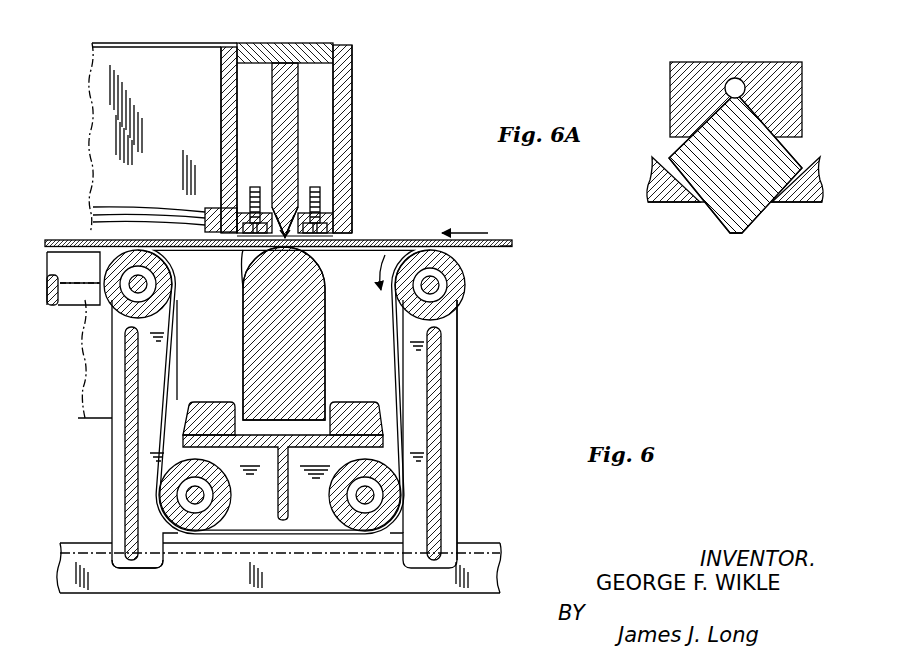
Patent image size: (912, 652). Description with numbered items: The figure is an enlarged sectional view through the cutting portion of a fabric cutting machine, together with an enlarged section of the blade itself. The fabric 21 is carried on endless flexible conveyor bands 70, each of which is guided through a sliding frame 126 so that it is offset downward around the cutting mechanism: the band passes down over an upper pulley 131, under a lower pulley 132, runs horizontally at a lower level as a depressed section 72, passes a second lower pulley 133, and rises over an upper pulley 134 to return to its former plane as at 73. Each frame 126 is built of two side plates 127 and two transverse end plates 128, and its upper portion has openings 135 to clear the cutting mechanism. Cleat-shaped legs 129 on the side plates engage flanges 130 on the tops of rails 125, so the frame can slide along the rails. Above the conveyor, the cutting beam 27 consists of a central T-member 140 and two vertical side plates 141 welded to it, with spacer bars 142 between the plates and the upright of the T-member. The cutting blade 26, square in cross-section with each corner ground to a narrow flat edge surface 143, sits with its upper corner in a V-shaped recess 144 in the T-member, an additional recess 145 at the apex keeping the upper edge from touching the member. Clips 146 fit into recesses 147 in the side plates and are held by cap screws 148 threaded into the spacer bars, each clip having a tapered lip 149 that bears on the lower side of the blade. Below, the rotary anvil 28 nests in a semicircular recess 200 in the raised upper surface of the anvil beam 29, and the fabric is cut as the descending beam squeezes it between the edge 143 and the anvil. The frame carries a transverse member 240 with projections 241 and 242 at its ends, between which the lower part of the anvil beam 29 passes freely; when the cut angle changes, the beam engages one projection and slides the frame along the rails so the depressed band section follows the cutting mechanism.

In FIG. 6, the fabric 21 is at (408, 240).
In FIG. 6, the cutting blade 26 is at (330, 160).
In FIG. 6A, the cutting blade 26 is at (790, 158).
In FIG. 6, the cutting beam 27 is at (364, 71).
In FIG. 6, the rotary anvil 28 is at (300, 285).
In FIG. 6, the anvil beam 29 is at (310, 355).
In FIG. 6, the conveyor bands 70 is at (500, 250).
In FIG. 6, the depressed section of conveyor band 72 is at (300, 540).
In FIG. 6, the returned band section 73 is at (100, 255).
In FIG. 6, the rails 125 is at (410, 585).
In FIG. 6, the sliding frame 126 is at (462, 375).
In FIG. 6, the side plates 127 is at (447, 470).
In FIG. 6, the transverse end plates 128 is at (128, 472).
In FIG. 6, the cleat-shaped legs 129 is at (150, 568).
In FIG. 6, the flanges 130 is at (486, 545).
In FIG. 6, the upper pulley 131 is at (463, 290).
In FIG. 6, the lower pulley 132 is at (358, 525).
In FIG. 6, the second lower pulley 133 is at (200, 522).
In FIG. 6, the upper pulley 134 is at (108, 303).
In FIG. 6, the openings 135 is at (440, 330).
In FIG. 6, the central T-member 140 is at (290, 70).
In FIG. 6A, the central T-member 140 is at (738, 64).
In FIG. 6, the vertical side plates 141 is at (222, 95).
In FIG. 6, the spacer bars 142 is at (252, 195).
In FIG. 6, the flat edge surface 143 is at (300, 250).
In FIG. 6A, the flat edge surface 143 is at (737, 236).
In FIG. 6, the V-shaped recess 144 is at (232, 215).
In FIG. 6, the additional recess 145 is at (288, 160).
In FIG. 6, the clips 146 is at (345, 226).
In FIG. 6A, the clips 146 is at (662, 177).
In FIG. 6, the recesses 147 is at (348, 210).
In FIG. 6, the cap screws 148 is at (140, 215).
In FIG. 6, the tapered flange or lip 149 is at (240, 255).
In FIG. 6, the semicircular recess 200 is at (300, 326).
In FIG. 6, the transverse member 240 is at (278, 448).
In FIG. 6, the projection 241 is at (216, 404).
In FIG. 6, the projection 242 is at (355, 404).